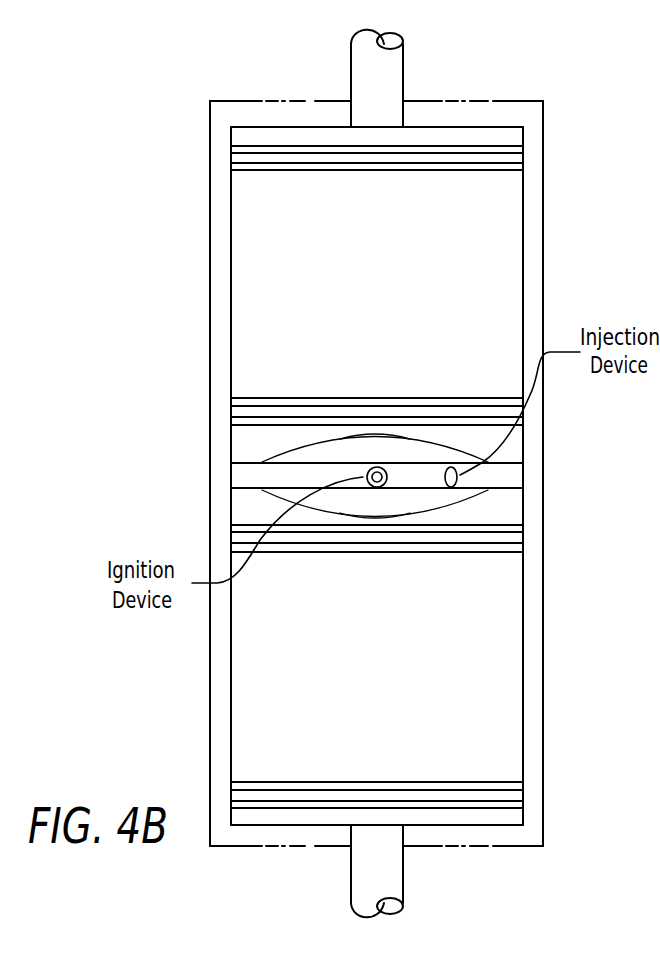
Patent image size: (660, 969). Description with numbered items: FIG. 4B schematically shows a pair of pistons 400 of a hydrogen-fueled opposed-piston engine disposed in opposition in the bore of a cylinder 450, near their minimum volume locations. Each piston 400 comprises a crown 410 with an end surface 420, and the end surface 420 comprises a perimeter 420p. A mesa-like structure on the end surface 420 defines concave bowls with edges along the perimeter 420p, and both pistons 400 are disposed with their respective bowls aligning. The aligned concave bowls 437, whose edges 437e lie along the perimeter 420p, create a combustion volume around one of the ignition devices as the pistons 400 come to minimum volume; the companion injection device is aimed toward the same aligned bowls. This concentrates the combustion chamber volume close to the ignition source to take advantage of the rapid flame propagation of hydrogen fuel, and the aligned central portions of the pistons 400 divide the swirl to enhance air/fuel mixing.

The piston 400 is at (523, 201).
The cylinder 450 is at (545, 263).
The crown 410 is at (527, 445).
The end surface 420 is at (518, 464).
The perimeter 420p is at (231, 463).
The concave bowl 437 is at (303, 458).
The edge 437e is at (373, 437).